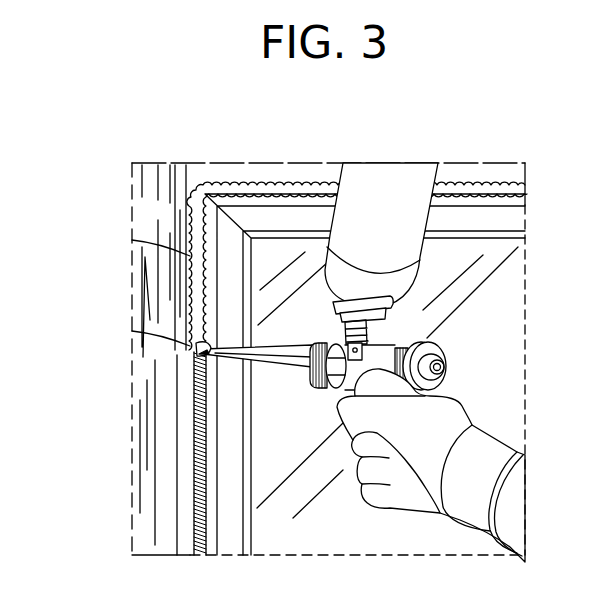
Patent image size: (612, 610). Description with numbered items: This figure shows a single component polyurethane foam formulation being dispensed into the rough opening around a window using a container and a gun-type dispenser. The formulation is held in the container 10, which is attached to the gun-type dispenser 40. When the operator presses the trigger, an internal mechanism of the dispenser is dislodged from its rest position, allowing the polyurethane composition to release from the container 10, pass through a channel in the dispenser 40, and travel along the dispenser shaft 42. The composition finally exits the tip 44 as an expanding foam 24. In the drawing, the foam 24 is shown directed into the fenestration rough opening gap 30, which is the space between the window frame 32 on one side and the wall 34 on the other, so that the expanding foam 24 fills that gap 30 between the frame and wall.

The container 10 is at (380, 177).
The expanding foam 24 is at (193, 266).
The fenestration rough opening gap 30 is at (195, 475).
The window frame 32 is at (233, 460).
The wall 34 is at (158, 520).
The gun-type dispenser 40 is at (388, 343).
The dispenser shaft 42 is at (282, 362).
The tip 44 is at (198, 347).